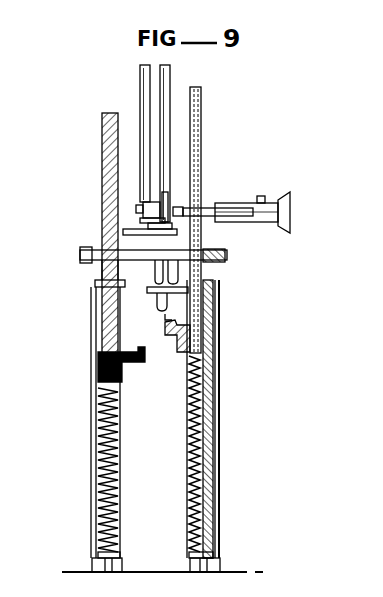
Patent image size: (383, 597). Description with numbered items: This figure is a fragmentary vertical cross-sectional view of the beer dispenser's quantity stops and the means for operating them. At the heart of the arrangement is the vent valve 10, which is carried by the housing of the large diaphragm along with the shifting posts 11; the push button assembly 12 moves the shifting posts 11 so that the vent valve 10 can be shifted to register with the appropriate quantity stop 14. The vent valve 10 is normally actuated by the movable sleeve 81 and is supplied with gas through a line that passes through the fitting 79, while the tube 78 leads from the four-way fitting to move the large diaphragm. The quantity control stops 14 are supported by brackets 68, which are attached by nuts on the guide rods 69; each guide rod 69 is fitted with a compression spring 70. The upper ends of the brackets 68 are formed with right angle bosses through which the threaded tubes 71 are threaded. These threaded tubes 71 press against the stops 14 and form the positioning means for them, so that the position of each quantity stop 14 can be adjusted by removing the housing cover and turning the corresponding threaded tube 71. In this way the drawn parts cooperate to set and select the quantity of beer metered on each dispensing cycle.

The vent valve 10 is at (190, 250).
The shifting posts 11 is at (164, 67).
The push button assembly 12 is at (266, 222).
The quantity stop 14 is at (130, 377).
The bracket 68 is at (91, 449).
The guide rod 69 is at (193, 499).
The compression spring 70 is at (193, 530).
The threaded tube 71 is at (102, 150).
The tube 78 is at (145, 199).
The fitting 79 is at (170, 198).
The movable sleeve 81 is at (202, 276).